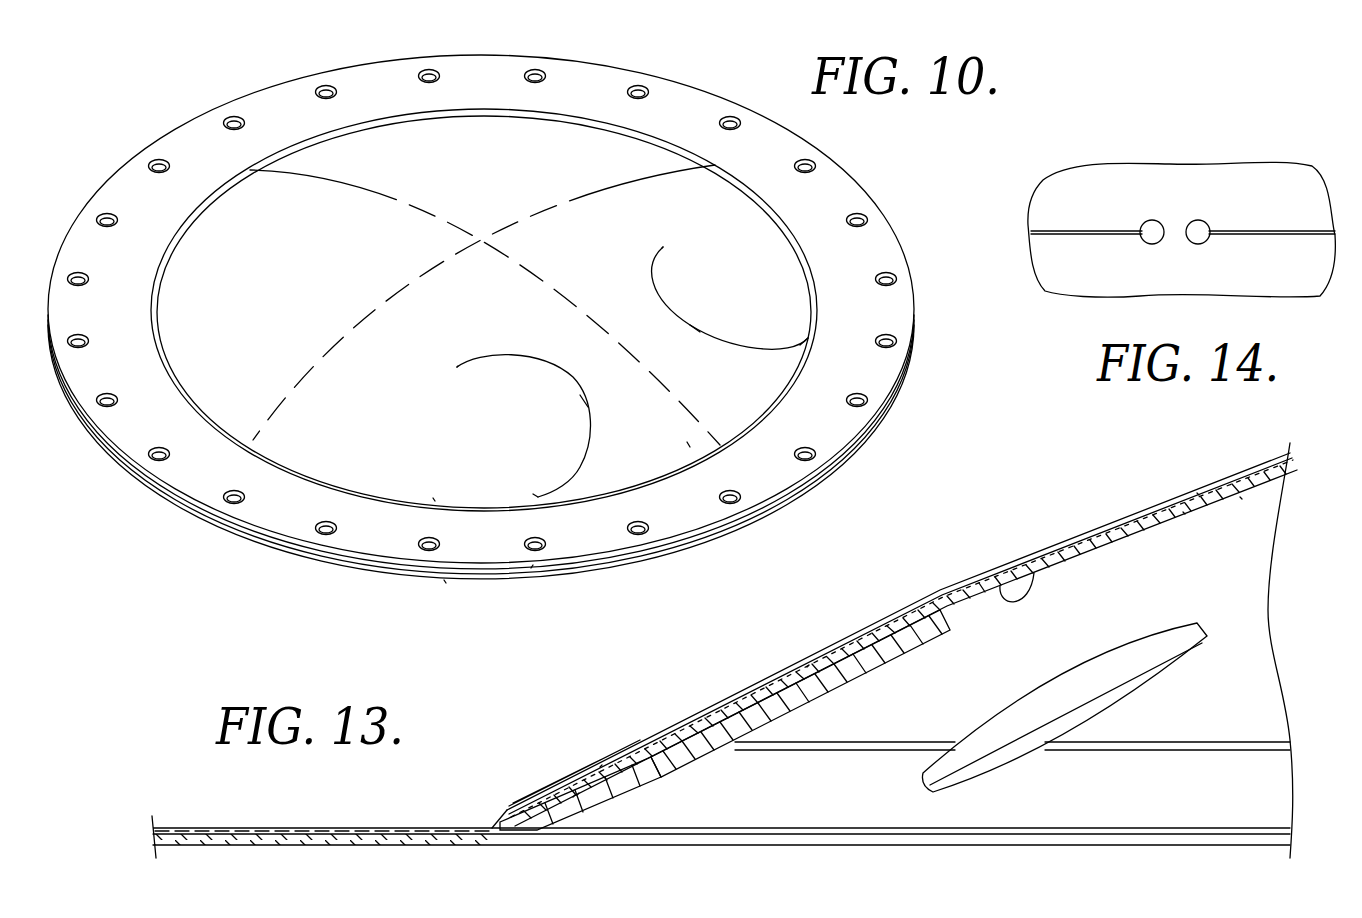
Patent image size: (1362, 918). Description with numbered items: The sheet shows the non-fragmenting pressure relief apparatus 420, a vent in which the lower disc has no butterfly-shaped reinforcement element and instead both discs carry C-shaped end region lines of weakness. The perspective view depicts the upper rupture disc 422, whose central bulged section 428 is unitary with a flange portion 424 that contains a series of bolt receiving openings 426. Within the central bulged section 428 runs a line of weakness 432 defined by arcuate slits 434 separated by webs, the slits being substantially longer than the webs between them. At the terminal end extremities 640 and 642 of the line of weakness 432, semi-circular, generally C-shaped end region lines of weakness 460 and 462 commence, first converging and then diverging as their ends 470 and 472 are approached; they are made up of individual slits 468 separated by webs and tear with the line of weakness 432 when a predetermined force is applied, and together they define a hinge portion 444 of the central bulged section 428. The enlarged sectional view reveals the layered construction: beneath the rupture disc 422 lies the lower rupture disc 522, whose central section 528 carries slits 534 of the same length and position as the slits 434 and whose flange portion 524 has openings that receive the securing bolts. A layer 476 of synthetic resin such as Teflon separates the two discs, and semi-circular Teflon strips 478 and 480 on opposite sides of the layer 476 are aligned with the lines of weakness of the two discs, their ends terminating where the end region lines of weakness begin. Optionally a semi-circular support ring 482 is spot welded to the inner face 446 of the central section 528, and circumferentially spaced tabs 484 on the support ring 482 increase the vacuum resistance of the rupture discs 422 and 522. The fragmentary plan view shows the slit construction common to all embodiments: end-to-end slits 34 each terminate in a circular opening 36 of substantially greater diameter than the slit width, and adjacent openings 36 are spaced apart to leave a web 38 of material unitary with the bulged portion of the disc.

In FIG. 10, the non-fragmenting pressure relief apparatus 420 is at (865, 152).
In FIG. 10, the rupture disc 422 is at (192, 120).
In FIG. 13, the rupture disc 422 is at (1060, 540).
In FIG. 10, the flange portion 424 is at (687, 108).
In FIG. 13, the flange portion 424 is at (297, 827).
In FIG. 10, the bolt receiving openings 426 is at (323, 86).
In FIG. 10, the central bulged section 428 is at (237, 223).
In FIG. 13, the central bulged section 428 is at (1197, 493).
In FIG. 10, the line of weakness 432 is at (183, 383).
In FIG. 10, the slits 434 is at (458, 476).
In FIG. 13, the slits 434 is at (573, 797).
In FIG. 10, the hinge portion 444 is at (690, 447).
In FIG. 13, the inner face 446 is at (992, 584).
In FIG. 10, the end region line of weakness 460 is at (497, 352).
In FIG. 10, the end region line of weakness 462 is at (653, 262).
In FIG. 10, the slits 468 is at (700, 332).
In FIG. 10, the end 470 is at (457, 367).
In FIG. 10, the end 472 is at (663, 248).
In FIG. 10, the layer 476 is at (533, 565).
In FIG. 13, the layer 476 is at (807, 667).
In FIG. 13, the Teflon strip 478 is at (600, 767).
In FIG. 13, the Teflon strip 480 is at (613, 787).
In FIG. 13, the support ring 482 is at (1270, 781).
In FIG. 13, the tabs 484 is at (1120, 690).
In FIG. 10, the rupture disc 522 is at (446, 585).
In FIG. 13, the rupture disc 522 is at (1252, 508).
In FIG. 13, the flange portion 524 is at (343, 843).
In FIG. 13, the central section 528 is at (1183, 512).
In FIG. 13, the slits 534 is at (577, 797).
In FIG. 10, the terminal end extremity 640 is at (537, 494).
In FIG. 10, the terminal end extremity 642 is at (808, 336).
In FIG. 14, the slits 34 is at (1090, 230).
In FIG. 14, the circular opening 36 is at (1158, 243).
In FIG. 14, the web 38 is at (1172, 228).